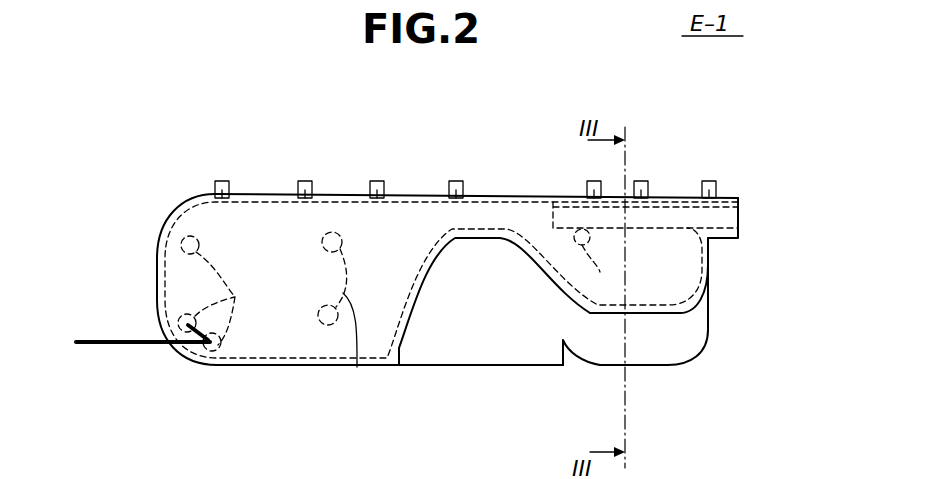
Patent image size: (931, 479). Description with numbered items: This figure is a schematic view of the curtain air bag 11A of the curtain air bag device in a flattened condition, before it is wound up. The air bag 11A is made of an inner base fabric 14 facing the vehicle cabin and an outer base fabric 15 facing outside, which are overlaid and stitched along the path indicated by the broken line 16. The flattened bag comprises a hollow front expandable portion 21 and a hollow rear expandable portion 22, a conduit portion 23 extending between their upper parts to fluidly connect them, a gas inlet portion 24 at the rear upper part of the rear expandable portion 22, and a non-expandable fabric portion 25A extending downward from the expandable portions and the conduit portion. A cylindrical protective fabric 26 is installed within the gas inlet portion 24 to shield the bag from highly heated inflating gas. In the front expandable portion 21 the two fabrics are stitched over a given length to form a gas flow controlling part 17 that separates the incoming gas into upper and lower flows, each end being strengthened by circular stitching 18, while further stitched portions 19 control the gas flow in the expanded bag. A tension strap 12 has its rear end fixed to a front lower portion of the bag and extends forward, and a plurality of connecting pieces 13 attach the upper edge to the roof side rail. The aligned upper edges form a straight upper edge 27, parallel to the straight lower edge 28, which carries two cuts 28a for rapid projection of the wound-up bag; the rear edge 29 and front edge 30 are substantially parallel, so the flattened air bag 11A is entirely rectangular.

The air bag 11A is at (170, 216).
The tension strap 12 is at (152, 345).
The connecting pieces 13 is at (222, 181).
The inner base fabric 14 is at (688, 358).
The outer base fabric 15 is at (648, 313).
The broken line 16 is at (519, 200).
The gas flow controlling part 17 is at (357, 368).
The circular stitching 18 is at (343, 239).
The stitched portions 19 is at (397, 290).
The front expandable portion 21 is at (270, 240).
The rear expandable portion 22 is at (660, 265).
The conduit portion 23 is at (483, 226).
The gas inlet portion 24 is at (735, 198).
The non-expandable fabric portion 25A is at (494, 374).
The cylindrical protective fabric 26 is at (672, 228).
The straight upper edge 27 is at (416, 184).
The straight lower edge 28 is at (280, 378).
The cuts 28a is at (396, 368).
The rear edge 29 is at (712, 303).
The front edge 30 is at (150, 274).